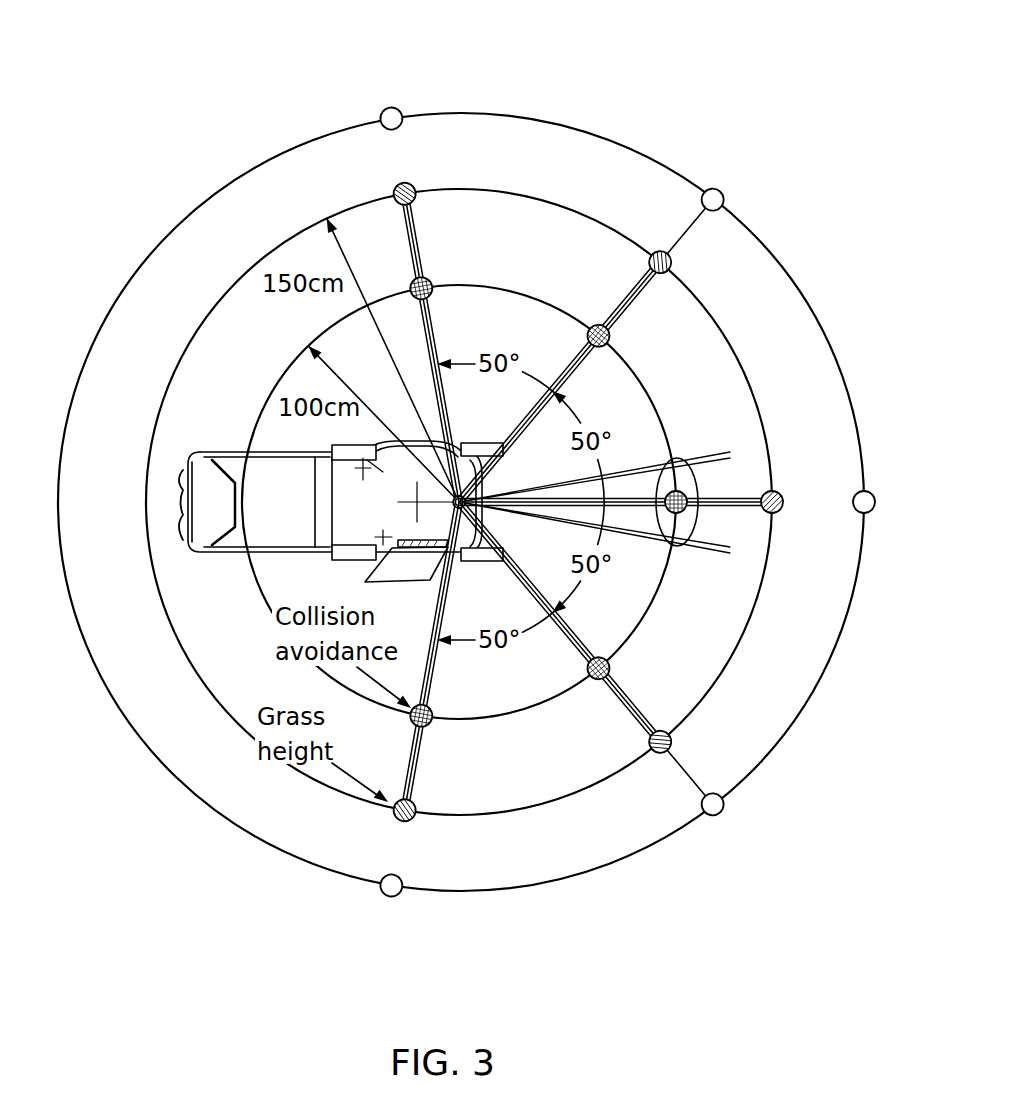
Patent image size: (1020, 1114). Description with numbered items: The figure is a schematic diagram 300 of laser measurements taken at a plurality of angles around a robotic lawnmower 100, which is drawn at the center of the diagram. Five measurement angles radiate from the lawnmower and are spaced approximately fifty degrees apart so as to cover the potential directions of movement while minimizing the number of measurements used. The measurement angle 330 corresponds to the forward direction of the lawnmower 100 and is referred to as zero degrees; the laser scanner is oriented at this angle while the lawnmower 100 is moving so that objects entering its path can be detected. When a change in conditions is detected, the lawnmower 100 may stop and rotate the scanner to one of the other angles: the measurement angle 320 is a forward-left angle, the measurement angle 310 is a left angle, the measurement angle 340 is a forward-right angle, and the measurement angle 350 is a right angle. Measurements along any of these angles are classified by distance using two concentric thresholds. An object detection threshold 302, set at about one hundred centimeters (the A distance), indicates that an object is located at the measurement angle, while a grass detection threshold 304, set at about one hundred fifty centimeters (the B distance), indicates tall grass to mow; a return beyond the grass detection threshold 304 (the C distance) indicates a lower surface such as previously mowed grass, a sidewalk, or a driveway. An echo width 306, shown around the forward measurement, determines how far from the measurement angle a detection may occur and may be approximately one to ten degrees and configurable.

The schematic diagram 300 is at (148, 47).
The object detection threshold 302 is at (273, 383).
The grass detection threshold 304 is at (280, 242).
The echo width 306 is at (680, 545).
The lawnmower 100 is at (360, 500).
The measurement angle 310 is at (410, 225).
The measurement angle 320 is at (633, 294).
The measurement angle 330 is at (738, 500).
The measurement angle 340 is at (630, 706).
The measurement angle 350 is at (414, 757).